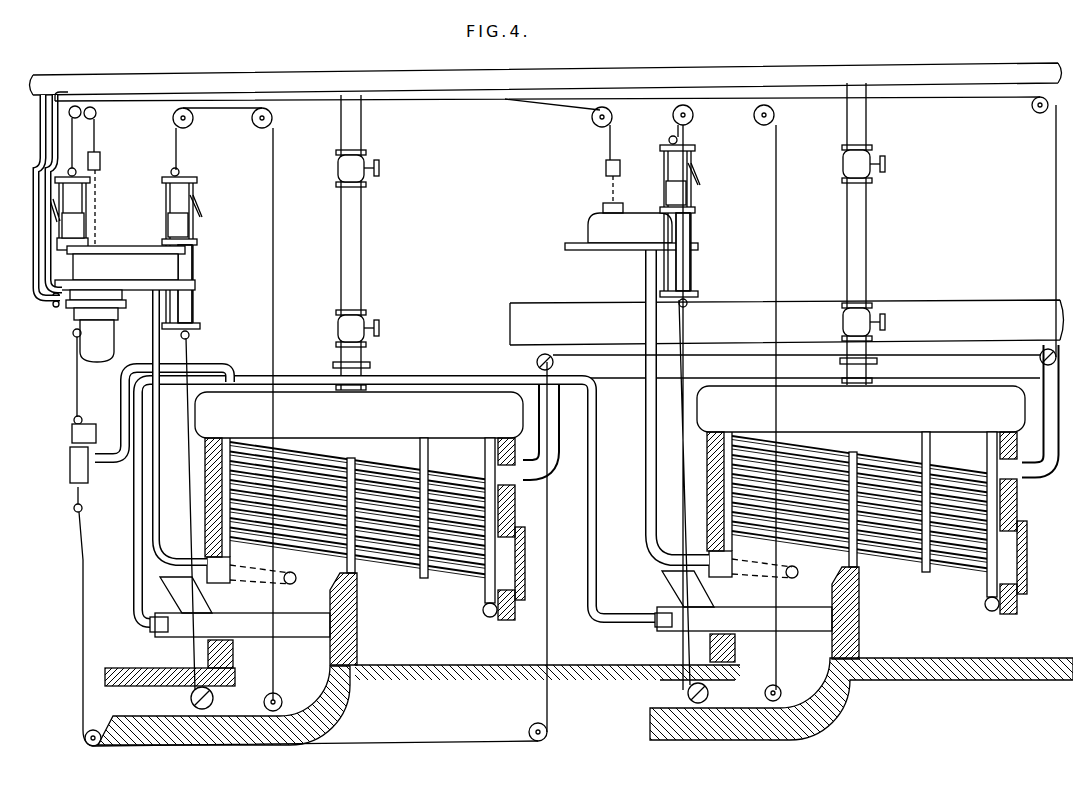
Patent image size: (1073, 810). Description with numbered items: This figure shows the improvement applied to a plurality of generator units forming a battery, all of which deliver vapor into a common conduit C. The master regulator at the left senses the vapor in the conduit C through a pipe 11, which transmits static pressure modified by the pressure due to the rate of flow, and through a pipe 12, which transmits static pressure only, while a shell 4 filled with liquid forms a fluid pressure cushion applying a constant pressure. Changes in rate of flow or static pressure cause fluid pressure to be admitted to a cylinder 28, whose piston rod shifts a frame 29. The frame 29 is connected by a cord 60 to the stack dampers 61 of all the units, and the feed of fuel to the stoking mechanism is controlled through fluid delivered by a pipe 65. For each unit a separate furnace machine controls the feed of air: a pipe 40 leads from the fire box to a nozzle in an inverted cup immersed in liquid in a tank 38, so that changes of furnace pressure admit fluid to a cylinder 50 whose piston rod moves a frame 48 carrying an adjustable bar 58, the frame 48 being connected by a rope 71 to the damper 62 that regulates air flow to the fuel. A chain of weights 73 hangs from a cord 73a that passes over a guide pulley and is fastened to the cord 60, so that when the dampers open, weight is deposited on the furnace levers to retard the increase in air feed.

The conduit C is at (433, 74).
The shell 4 is at (83, 345).
The pipe 11 is at (46, 268).
The pipe 12 is at (36, 225).
The cylinder 28 is at (82, 228).
The frame 29 is at (88, 196).
The tank 38 is at (125, 268).
The pipe 40 is at (152, 333).
The frame 48 is at (163, 210).
The cylinder 50 is at (194, 268).
The bar 58 is at (631, 226).
The cord 60 is at (83, 588).
The stack damper 61 is at (537, 362).
The damper 62 is at (213, 700).
The pipe 65 is at (134, 505).
The rope 71 is at (273, 274).
The chain 73 is at (96, 210).
The cord 73a is at (100, 138).